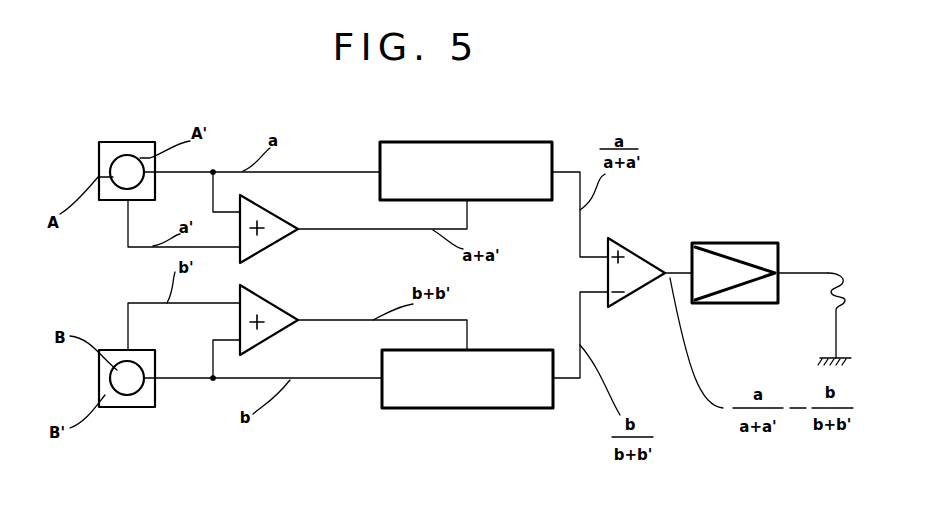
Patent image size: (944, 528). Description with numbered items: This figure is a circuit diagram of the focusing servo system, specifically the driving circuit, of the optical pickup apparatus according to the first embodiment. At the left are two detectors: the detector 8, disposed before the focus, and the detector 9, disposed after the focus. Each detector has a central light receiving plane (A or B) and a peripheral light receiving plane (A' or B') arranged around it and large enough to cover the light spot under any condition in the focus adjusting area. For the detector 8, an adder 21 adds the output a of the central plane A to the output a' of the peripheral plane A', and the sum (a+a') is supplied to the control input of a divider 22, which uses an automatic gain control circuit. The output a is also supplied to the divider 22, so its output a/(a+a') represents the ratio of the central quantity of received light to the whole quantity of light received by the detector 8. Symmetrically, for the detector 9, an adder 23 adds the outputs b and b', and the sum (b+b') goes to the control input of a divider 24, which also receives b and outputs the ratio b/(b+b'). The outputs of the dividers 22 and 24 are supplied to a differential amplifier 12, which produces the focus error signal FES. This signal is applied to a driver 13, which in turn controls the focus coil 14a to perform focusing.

The detector 8 is at (137, 142).
The detector 9 is at (140, 413).
The adder 21 is at (273, 246).
The adder 23 is at (260, 296).
The divider 22 is at (553, 156).
The divider 24 is at (382, 398).
The differential amplifier 12 is at (648, 286).
The driver 13 is at (765, 303).
The focus coil 14a is at (843, 277).